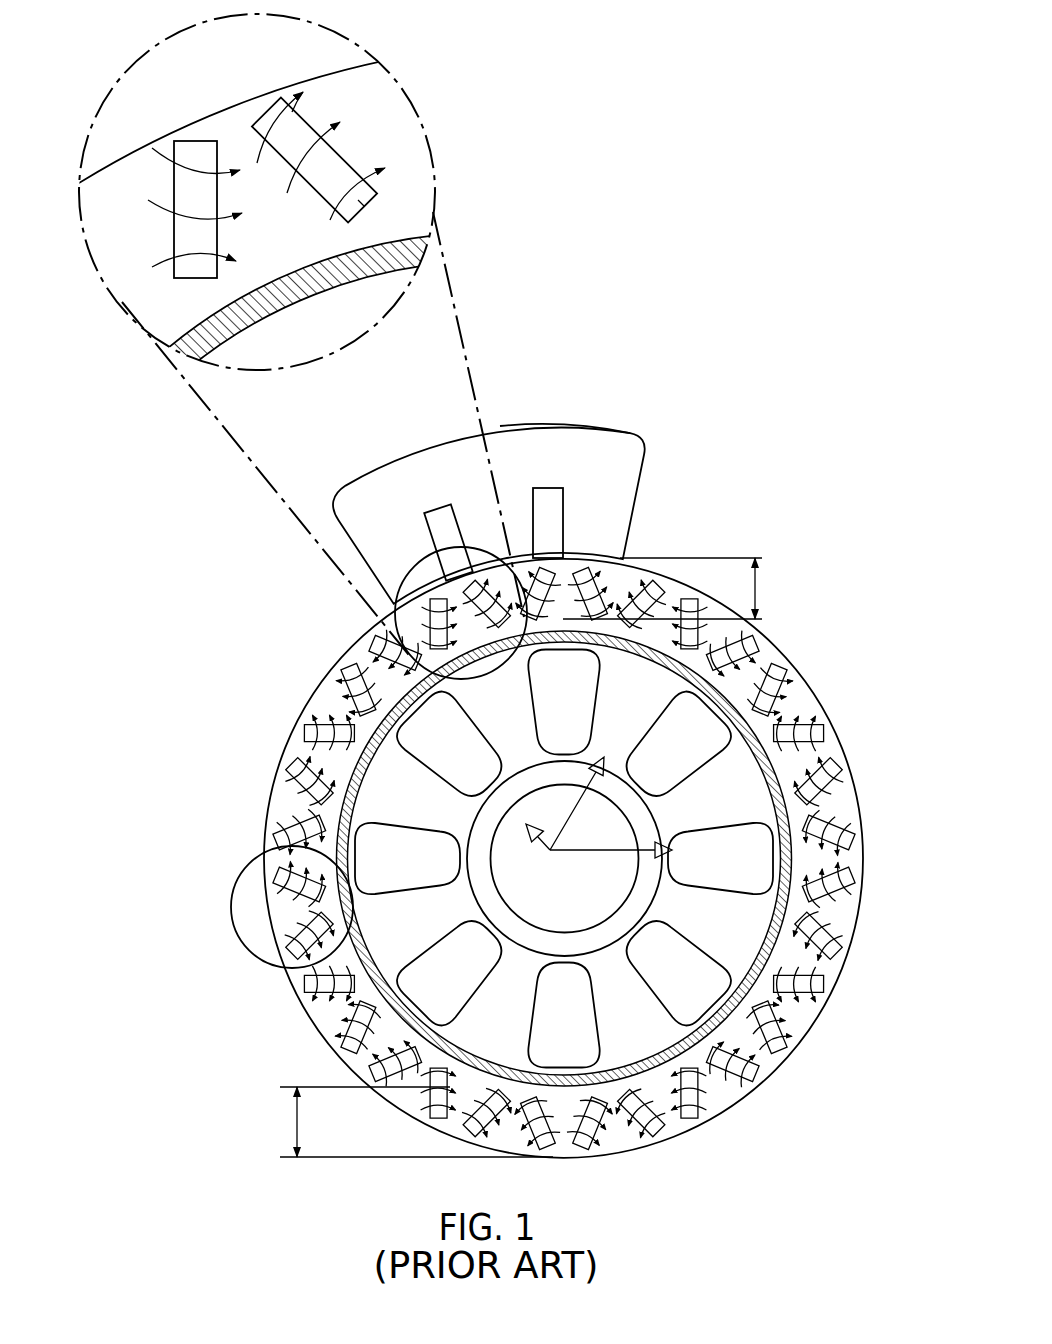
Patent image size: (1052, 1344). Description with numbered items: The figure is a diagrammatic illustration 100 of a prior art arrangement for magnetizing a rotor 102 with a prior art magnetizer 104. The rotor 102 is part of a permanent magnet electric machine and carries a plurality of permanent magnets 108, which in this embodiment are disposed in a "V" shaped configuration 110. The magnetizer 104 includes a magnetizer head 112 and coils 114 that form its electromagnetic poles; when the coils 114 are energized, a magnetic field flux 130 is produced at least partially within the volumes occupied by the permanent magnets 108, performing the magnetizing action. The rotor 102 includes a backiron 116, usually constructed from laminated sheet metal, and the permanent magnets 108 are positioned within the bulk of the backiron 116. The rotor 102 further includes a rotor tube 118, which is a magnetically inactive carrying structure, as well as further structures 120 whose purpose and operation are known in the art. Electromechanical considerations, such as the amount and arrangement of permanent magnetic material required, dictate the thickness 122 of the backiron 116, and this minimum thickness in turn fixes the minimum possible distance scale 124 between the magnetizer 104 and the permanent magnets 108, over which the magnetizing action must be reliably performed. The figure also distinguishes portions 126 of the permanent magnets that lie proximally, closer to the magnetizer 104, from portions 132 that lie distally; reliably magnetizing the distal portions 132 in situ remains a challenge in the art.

The diagrammatic illustration 100 is at (753, 80).
The rotor 102 is at (800, 1072).
The magnetizer 104 is at (655, 444).
The permanent magnets 108 is at (800, 690).
The "V" shaped configuration 110 is at (233, 913).
The magnetizer head 112 is at (578, 430).
The coils 114 is at (545, 500).
The backiron 116 is at (283, 803).
The rotor tube 118 is at (770, 774).
The further structures 120 is at (593, 816).
The thickness 122 is at (297, 1116).
The distance scale 124 is at (758, 590).
The proximal portions of the permanent magnets 126 is at (286, 116).
The magnetic field flux 130 is at (670, 625).
The distal portions of the permanent magnets 132 is at (358, 200).